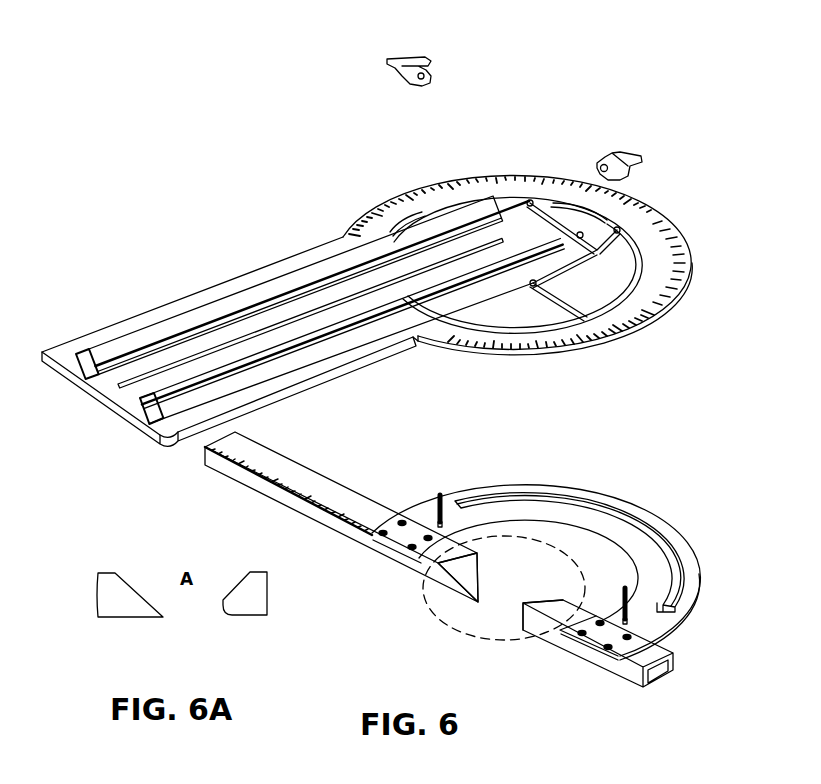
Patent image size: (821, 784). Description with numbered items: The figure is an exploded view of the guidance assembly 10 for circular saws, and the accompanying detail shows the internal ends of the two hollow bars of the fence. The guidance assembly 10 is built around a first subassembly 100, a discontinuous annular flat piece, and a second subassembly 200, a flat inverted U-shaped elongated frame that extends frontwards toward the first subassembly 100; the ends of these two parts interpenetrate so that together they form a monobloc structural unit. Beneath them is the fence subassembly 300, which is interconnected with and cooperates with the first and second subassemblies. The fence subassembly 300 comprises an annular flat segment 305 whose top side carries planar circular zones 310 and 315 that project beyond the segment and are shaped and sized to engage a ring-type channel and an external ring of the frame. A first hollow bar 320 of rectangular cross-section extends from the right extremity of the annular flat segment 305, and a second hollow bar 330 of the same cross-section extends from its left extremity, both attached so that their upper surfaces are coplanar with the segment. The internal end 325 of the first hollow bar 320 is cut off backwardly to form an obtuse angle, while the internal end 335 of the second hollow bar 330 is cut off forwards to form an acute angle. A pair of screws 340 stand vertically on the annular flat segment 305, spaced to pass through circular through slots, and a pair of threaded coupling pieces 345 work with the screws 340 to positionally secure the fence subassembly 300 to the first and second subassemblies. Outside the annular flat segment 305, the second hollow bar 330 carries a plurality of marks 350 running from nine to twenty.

In FIG. 6, the guidance assembly 10 is at (548, 152).
In FIG. 6, the second subassembly 200 is at (237, 238).
In FIG. 6, the first subassembly 100 is at (685, 296).
In FIG. 6, the threaded coupling pieces 345 is at (628, 157).
In FIG. 6, the fence subassembly 300 is at (642, 478).
In FIG. 6, the annular flat segment 305 is at (537, 520).
In FIG. 6, the planar circular zone 310 is at (662, 540).
In FIG. 6, the planar circular zone 315 is at (688, 552).
In FIG. 6, the first hollow bar 320 is at (641, 654).
In FIG. 6, the internal end of first hollow bar 325 is at (547, 610).
In FIG. 6A, the internal end of first hollow bar 325 is at (252, 602).
In FIG. 6, the second hollow bar 330 is at (285, 500).
In FIG. 6, the internal end of second hollow bar 335 is at (455, 573).
In FIG. 6A, the internal end of second hollow bar 335 is at (120, 597).
In FIG. 6, the screws 340 is at (445, 498).
In FIG. 6, the marks 350 is at (285, 473).